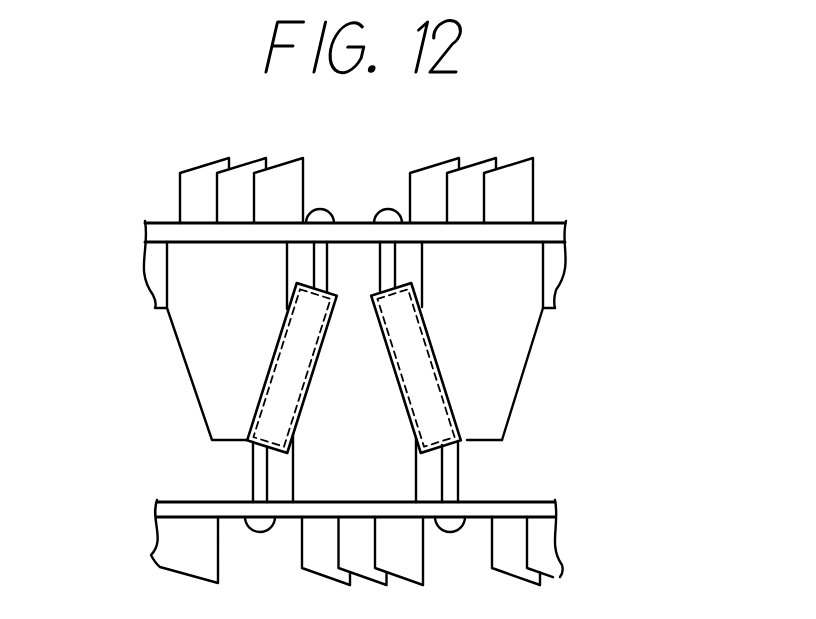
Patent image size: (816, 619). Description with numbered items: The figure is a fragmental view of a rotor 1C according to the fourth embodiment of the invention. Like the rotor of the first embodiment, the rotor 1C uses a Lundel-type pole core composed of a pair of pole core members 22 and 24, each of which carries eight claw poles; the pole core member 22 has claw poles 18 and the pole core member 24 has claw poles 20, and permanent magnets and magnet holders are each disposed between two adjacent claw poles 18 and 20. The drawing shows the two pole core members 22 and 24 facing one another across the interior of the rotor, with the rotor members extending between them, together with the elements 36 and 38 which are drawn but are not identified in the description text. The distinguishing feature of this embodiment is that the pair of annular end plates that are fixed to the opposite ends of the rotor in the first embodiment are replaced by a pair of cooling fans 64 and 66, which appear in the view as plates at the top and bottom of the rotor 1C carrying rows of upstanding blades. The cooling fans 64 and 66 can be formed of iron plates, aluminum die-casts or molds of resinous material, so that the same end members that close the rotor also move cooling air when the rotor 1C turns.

The rotor 1C is at (516, 147).
The claw pole 18 is at (527, 272).
The claw pole 20 is at (340, 485).
The pole core member 22 is at (529, 387).
The pole core member 24 is at (291, 483).
The upper connecting rod 36 is at (323, 258).
The lower connecting rod 38 is at (456, 487).
The cooling fan 64 is at (543, 233).
The cooling fan 66 is at (483, 513).